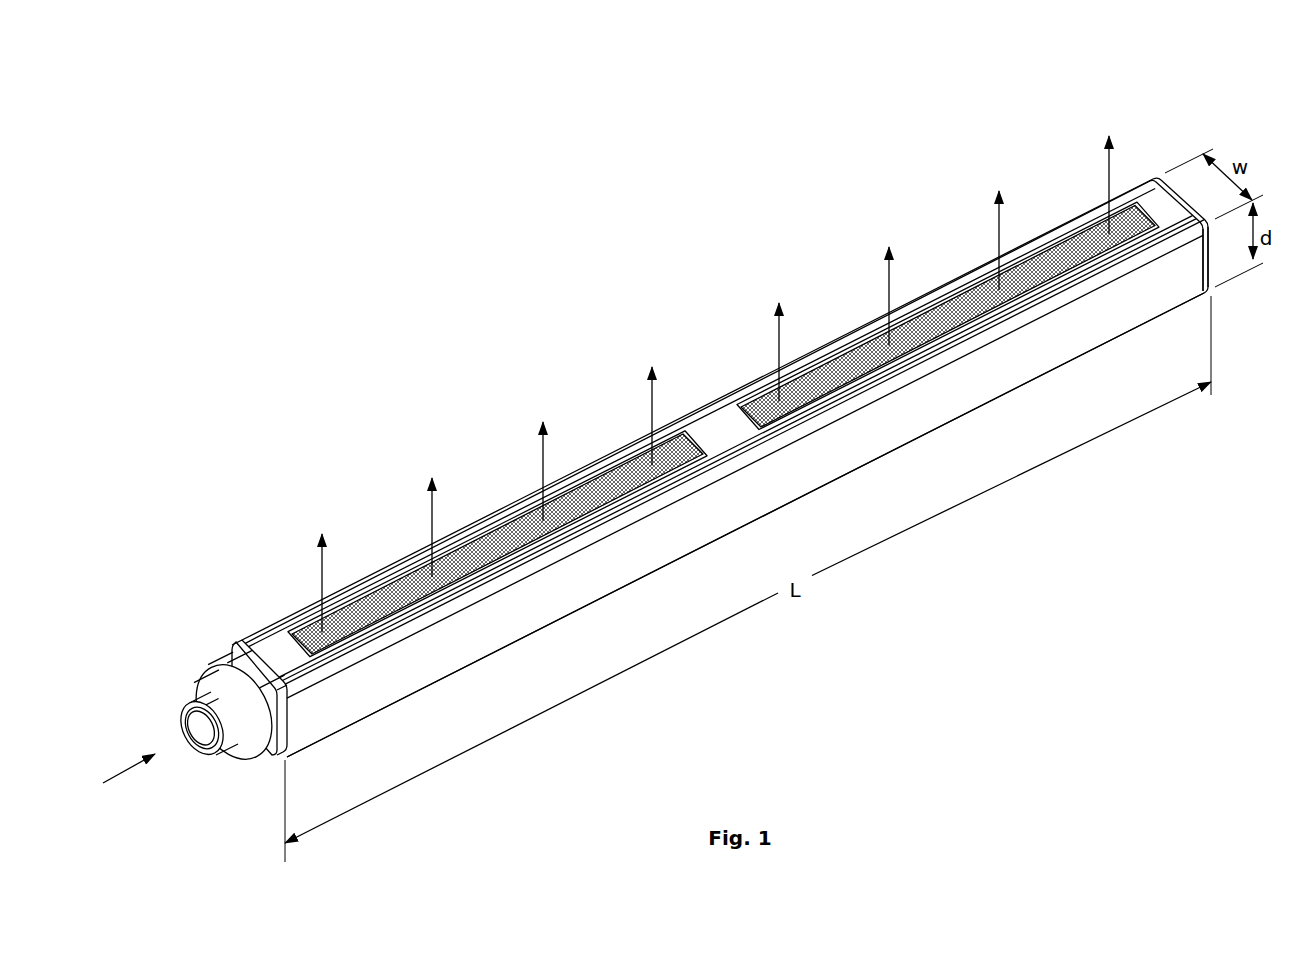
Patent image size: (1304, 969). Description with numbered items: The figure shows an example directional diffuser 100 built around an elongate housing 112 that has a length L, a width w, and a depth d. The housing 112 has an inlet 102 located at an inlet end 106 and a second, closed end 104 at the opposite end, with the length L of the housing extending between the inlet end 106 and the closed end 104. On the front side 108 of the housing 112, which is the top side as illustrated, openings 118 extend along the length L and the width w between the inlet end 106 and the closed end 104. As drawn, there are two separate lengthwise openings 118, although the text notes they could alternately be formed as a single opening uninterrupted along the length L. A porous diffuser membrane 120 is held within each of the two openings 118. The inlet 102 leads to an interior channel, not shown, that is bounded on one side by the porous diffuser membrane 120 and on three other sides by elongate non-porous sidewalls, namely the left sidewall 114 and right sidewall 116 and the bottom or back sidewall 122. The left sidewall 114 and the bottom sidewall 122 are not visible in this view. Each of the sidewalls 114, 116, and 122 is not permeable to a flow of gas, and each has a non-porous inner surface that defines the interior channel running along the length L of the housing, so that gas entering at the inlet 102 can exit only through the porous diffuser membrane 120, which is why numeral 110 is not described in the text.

The directional diffuser 100 is at (500, 355).
The inlet 102 is at (182, 755).
The closed end 104 is at (1205, 130).
The inlet end 106 is at (155, 695).
The front side 108 is at (257, 645).
The aperture slot 110 is at (587, 500).
The housing 112 is at (663, 540).
The left sidewall 114 is at (928, 270).
The right sidewall 116 is at (1016, 368).
The openings 118 is at (372, 588).
The porous diffuser membrane 120 is at (490, 543).
The bottom sidewall 122 is at (433, 690).